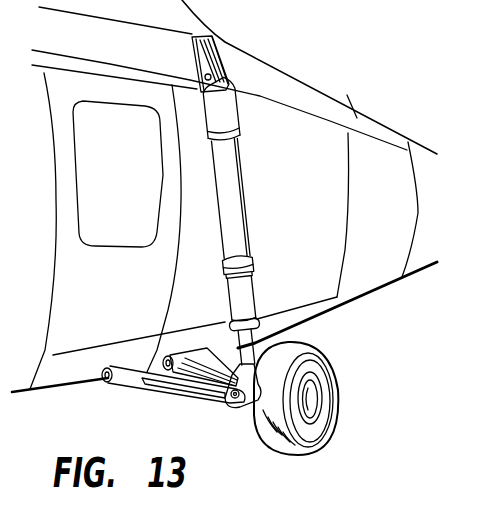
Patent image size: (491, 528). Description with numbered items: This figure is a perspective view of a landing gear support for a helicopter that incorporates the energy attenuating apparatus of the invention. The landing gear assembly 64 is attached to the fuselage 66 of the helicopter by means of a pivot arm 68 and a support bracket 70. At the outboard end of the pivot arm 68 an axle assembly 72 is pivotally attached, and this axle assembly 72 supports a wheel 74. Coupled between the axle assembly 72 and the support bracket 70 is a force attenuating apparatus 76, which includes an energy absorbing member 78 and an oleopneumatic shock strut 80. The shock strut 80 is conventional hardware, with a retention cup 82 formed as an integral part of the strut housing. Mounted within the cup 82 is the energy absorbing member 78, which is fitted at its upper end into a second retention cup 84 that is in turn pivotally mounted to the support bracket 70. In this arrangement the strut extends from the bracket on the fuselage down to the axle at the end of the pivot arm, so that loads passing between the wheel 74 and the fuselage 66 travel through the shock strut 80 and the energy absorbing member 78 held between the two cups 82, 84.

The landing gear assembly 64 is at (174, 397).
The fuselage 66 is at (386, 122).
The pivot arm 68 is at (133, 387).
The support bracket 70 is at (216, 62).
The axle assembly 72 is at (247, 402).
The wheel 74 is at (333, 384).
The force attenuating apparatus 76 is at (256, 241).
The energy absorbing member 78 is at (230, 198).
The oleopneumatic shock strut 80 is at (243, 320).
The retention cup 82 is at (238, 266).
The retention cup 84 is at (221, 108).